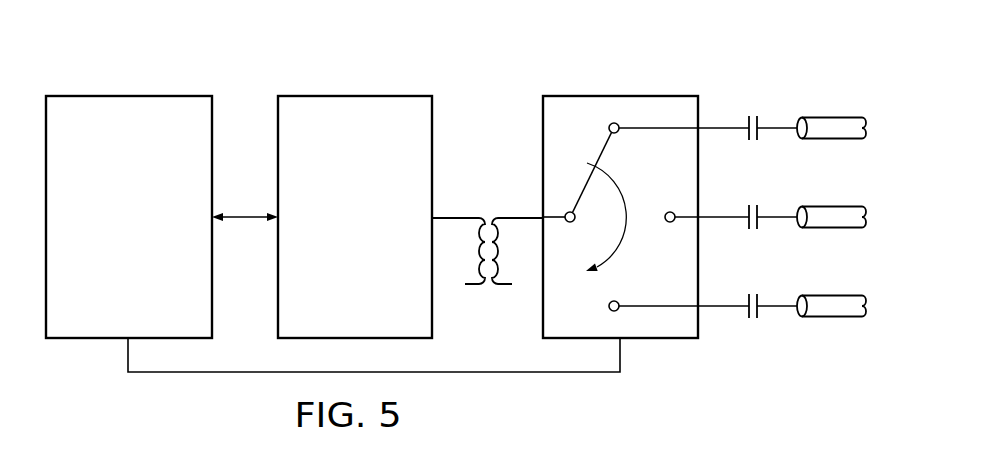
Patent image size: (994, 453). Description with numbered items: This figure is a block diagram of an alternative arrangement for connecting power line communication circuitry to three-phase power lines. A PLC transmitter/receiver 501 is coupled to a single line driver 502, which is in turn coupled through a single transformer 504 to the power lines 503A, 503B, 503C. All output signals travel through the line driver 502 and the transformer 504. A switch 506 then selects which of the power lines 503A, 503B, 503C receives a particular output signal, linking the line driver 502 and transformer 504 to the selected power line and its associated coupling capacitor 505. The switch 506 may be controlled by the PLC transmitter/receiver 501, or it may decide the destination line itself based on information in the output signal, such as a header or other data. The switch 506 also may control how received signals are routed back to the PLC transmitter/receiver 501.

The PLC transmitter/receiver 501 is at (108, 280).
The line driver 502 is at (335, 253).
The power line 503A is at (833, 117).
The power line 503B is at (833, 206).
The power line 503C is at (830, 318).
The transformer 504 is at (494, 206).
The coupling capacitor 505 is at (753, 112).
The switch 506 is at (636, 84).